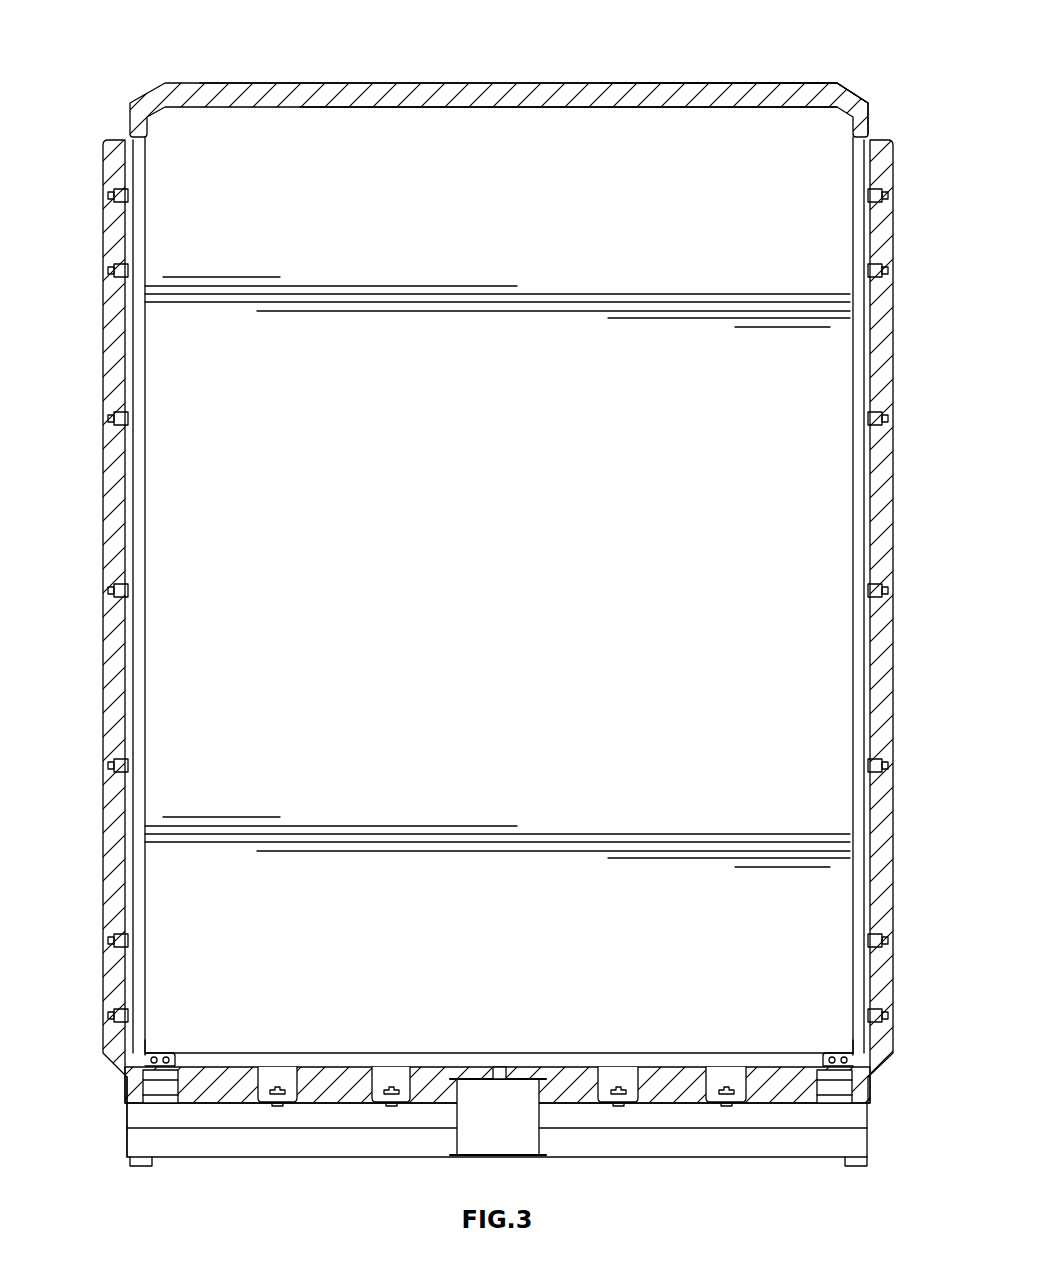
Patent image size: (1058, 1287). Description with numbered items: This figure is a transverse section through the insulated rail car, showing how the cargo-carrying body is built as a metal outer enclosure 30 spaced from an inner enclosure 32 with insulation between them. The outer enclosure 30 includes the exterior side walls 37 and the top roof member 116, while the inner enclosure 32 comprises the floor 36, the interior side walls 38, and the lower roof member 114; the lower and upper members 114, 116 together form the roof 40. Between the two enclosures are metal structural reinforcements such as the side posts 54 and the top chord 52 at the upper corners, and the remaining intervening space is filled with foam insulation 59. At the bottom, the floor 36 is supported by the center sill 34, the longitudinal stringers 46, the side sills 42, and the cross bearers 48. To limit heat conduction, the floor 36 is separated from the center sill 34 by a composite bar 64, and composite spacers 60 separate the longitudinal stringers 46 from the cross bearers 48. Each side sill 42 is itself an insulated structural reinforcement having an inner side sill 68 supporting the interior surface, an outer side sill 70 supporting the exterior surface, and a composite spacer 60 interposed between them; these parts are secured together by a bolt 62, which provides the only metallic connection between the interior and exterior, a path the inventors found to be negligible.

The outer enclosure 30 is at (312, 83).
The foam insulation 59 is at (490, 90).
The top roof member 116 is at (585, 83).
The roof 40 is at (678, 83).
The top chord 52 is at (882, 93).
The lower roof member 114 is at (562, 107).
The side posts 54 is at (128, 348).
The interior side walls 38 is at (152, 536).
The bolt 62 is at (118, 590).
The inner enclosure 32 is at (513, 580).
The exterior side walls 37 is at (892, 690).
The side sills 42 is at (187, 1025).
The inner side sill 68 is at (157, 1053).
The composite spacer 60 is at (182, 1067).
The floor 36 is at (440, 1067).
The composite bar 64 is at (497, 1067).
The longitudinal stringers 46 is at (617, 1067).
The outer side sill 70 is at (127, 1098).
The cross bearers 48 is at (308, 1140).
The center sill 34 is at (545, 1140).